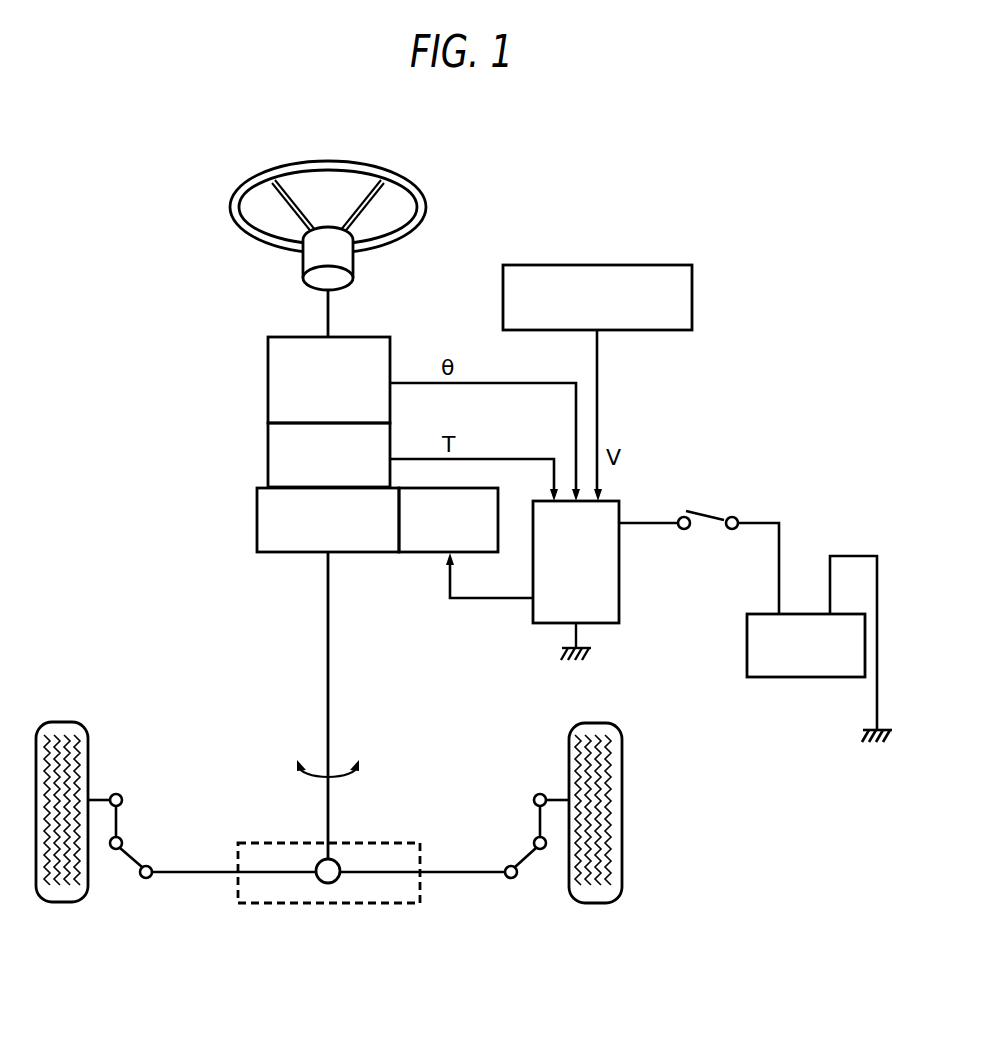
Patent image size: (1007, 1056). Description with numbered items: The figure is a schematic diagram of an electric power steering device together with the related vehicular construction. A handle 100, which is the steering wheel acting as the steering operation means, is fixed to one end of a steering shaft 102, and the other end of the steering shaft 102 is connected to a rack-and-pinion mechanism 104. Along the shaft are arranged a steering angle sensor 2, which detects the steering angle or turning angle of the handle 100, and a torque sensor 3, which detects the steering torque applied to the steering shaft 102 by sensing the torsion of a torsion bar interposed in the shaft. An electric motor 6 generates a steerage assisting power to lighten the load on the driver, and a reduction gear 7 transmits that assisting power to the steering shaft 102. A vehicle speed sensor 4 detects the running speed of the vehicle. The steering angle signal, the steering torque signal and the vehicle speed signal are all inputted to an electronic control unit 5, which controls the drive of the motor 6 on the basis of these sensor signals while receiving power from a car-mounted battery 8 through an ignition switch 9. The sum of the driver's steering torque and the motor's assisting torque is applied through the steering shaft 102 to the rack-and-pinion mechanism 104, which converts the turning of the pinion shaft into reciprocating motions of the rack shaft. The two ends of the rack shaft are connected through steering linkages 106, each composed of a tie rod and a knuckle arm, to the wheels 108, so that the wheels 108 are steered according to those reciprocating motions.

The handle 100 is at (428, 208).
The steering shaft 102 is at (326, 308).
The steering angle sensor 2 is at (268, 383).
The torque sensor 3 is at (268, 458).
The reduction gear 7 is at (257, 517).
The electric motor 6 is at (424, 556).
The vehicle speed sensor 4 is at (598, 265).
The electronic control unit 5 is at (619, 561).
The ignition switch 9 is at (720, 506).
The car-mounted battery 8 is at (747, 645).
The rack-and-pinion mechanism 104 is at (278, 840).
The steering linkage 106 is at (146, 842).
The wheel 108 is at (62, 722).